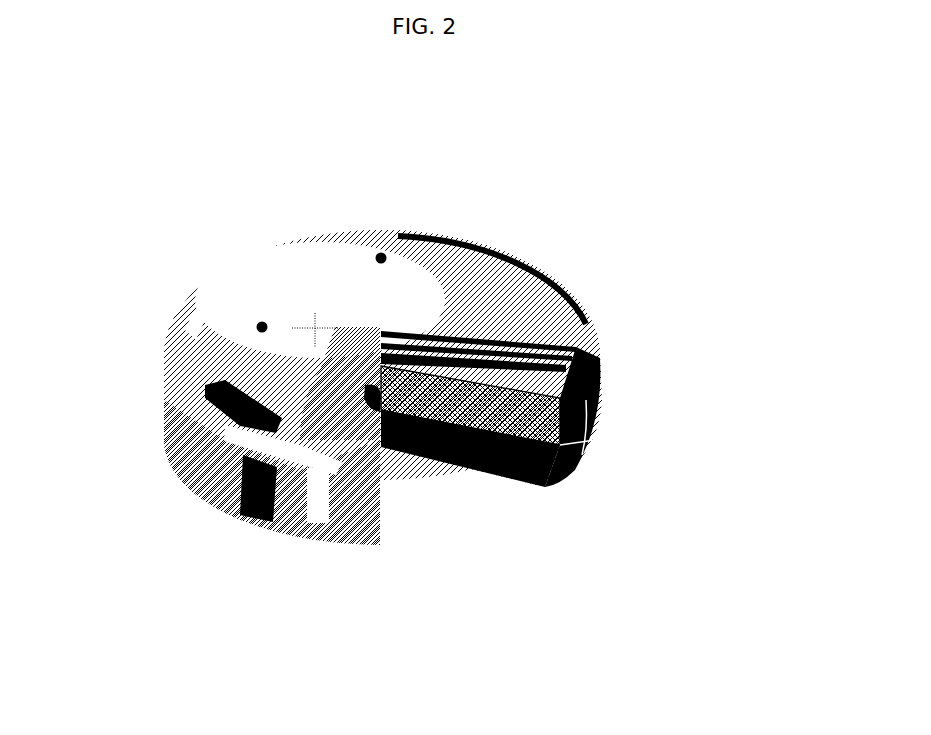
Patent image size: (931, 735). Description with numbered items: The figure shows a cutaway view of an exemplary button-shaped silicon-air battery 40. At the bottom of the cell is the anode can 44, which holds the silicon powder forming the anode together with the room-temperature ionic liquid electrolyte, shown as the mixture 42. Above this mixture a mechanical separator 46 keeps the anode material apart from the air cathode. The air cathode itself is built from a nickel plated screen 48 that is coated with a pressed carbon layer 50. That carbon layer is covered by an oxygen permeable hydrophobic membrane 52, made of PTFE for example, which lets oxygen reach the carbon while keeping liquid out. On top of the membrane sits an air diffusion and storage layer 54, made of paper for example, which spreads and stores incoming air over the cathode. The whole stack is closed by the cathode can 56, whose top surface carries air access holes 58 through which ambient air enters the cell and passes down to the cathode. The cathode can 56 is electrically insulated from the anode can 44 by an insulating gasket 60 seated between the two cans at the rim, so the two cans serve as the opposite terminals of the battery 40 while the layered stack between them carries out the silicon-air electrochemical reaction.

The button-shaped silicon-air battery 40 is at (437, 231).
The silicon powder and RTIL electrolyte mixture 42 is at (565, 477).
The anode can 44 is at (473, 473).
The mechanical separator 46 is at (588, 437).
The nickel plated screen 48 is at (557, 400).
The pressed carbon layer 50 is at (585, 352).
The oxygen permeable hydrophobic membrane 52 is at (590, 318).
The air diffusion and storage layer 54 is at (512, 333).
The cathode can 56 is at (242, 353).
The air access holes 58 is at (378, 255).
The insulating gasket 60 is at (583, 462).